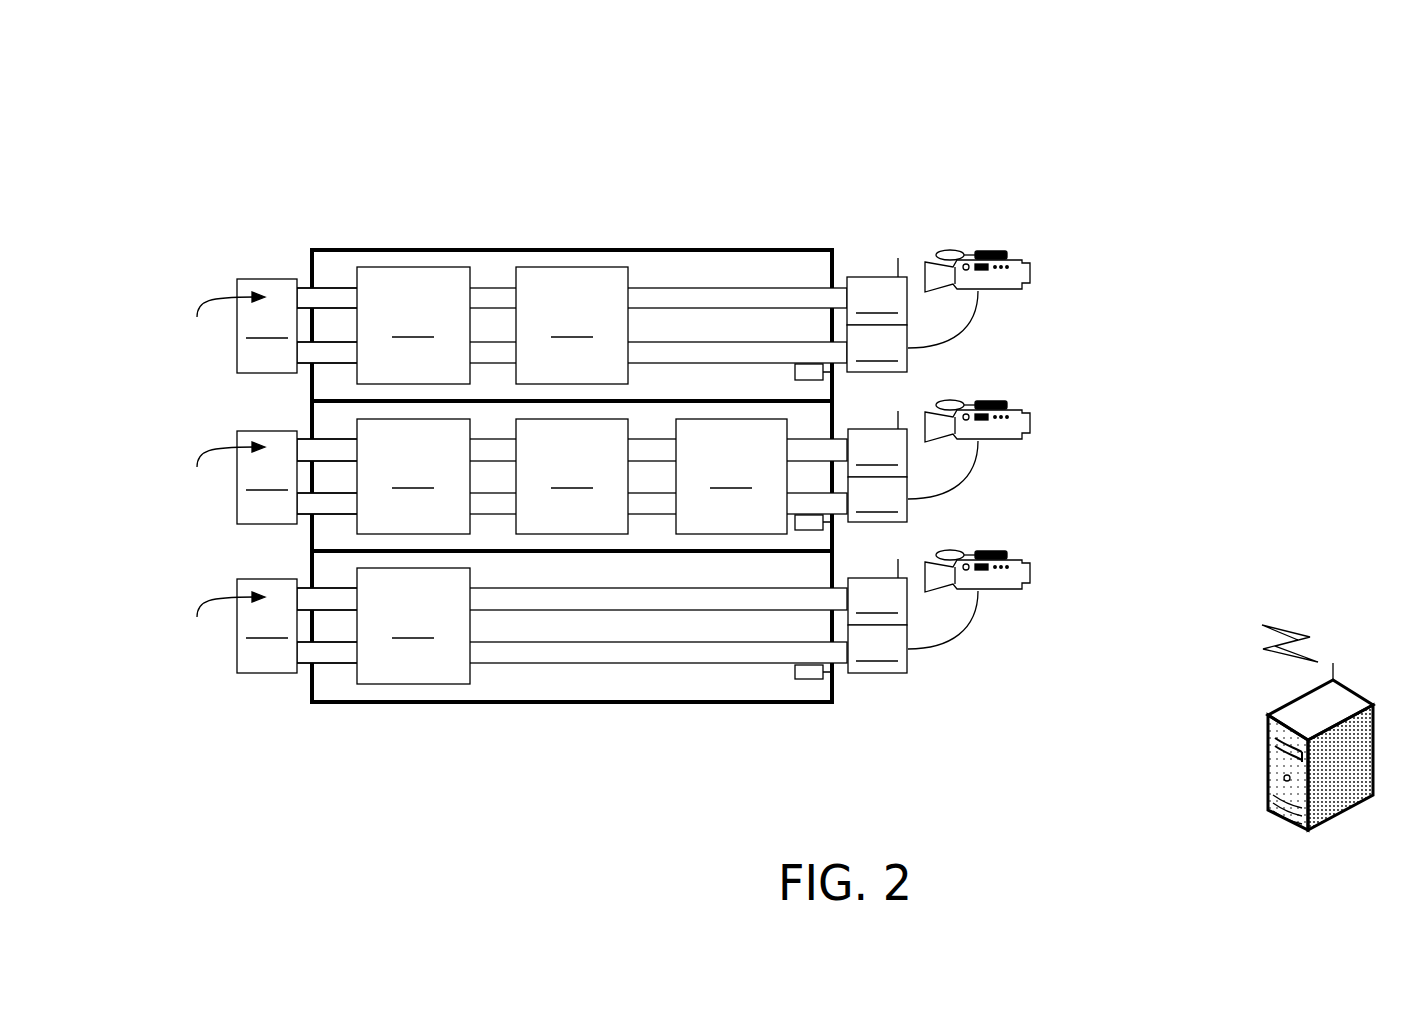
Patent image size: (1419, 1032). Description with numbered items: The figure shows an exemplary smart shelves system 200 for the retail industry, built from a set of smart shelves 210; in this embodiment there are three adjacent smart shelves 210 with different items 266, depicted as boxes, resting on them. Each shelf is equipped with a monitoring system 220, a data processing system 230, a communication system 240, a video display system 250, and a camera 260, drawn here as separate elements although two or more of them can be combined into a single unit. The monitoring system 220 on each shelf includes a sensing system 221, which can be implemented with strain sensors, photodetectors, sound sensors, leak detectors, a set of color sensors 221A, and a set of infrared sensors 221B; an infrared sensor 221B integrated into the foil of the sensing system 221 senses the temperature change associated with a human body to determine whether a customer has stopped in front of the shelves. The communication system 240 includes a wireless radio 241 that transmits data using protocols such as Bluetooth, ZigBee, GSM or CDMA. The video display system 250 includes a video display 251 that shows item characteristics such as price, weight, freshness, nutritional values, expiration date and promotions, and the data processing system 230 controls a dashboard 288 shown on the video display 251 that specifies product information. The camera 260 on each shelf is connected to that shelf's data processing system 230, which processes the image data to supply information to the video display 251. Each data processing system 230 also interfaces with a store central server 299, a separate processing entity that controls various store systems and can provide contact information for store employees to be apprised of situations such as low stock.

The smart shelves system 200 is at (992, 76).
The smart shelves 210 is at (572, 214).
The monitoring system 220 is at (457, 214).
The sensing system 221 is at (688, 260).
The color sensors 221A is at (334, 288).
The infrared sensors 221B is at (834, 374).
The data processing system 230 is at (912, 482).
The communication system 240 is at (893, 425).
The wireless radio 241 is at (877, 441).
The video display system 250 is at (237, 425).
The video display 251 is at (267, 476).
The camera 260 is at (982, 214).
The items 266 is at (572, 475).
The dashboard 288 is at (221, 471).
The store central server 299 is at (1375, 800).